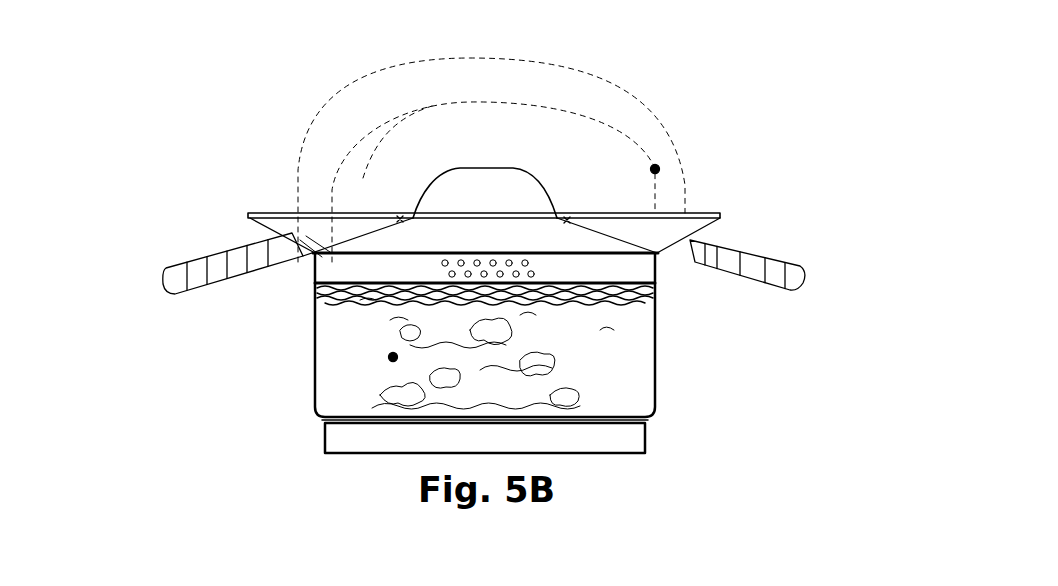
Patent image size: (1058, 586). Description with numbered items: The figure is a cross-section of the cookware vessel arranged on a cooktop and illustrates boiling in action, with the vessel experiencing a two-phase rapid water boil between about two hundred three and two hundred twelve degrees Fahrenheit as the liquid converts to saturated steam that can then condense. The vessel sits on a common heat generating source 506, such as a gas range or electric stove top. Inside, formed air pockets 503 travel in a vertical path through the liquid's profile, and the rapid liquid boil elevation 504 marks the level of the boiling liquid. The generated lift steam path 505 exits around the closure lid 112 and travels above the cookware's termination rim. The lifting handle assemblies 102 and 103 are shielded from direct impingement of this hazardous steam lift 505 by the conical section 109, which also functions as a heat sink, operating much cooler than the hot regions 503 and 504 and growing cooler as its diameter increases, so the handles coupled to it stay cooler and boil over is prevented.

The lifting handle assembly 102 is at (195, 245).
The lifting handle assembly 103 is at (757, 243).
The conical section 109 is at (293, 267).
The closure lid 112 is at (367, 212).
The formed air pockets 503 is at (393, 357).
The rapid liquid boil elevation 504 is at (619, 320).
The lift steam path 505 is at (655, 168).
The heat generating source 506 is at (614, 466).